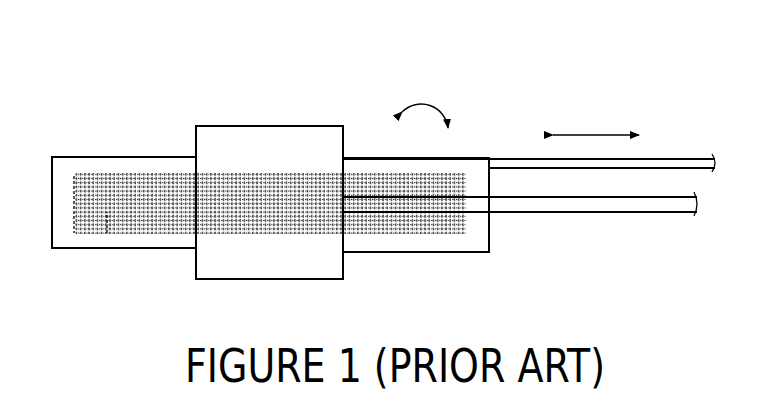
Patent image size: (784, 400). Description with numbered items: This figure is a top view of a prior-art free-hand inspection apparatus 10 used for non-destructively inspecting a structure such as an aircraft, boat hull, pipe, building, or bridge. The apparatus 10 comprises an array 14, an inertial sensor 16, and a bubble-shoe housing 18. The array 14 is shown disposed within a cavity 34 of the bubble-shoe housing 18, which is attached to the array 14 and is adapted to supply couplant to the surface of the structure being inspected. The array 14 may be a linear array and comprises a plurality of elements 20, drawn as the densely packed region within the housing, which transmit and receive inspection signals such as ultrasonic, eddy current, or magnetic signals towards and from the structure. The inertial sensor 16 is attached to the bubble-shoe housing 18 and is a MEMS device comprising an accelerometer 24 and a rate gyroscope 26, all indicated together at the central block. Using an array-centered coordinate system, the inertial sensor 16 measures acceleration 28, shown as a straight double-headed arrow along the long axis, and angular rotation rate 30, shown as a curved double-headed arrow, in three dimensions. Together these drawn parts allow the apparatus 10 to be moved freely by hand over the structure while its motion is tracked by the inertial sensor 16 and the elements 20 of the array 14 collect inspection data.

The free-hand inspection apparatus 10 is at (378, 76).
The array 14 is at (107, 233).
The inertial sensor 16 is at (217, 126).
The bubble-shoe housing 18 is at (52, 188).
The elements 20 is at (145, 172).
The accelerometer 24 is at (269, 202).
The rate gyroscope 26 is at (269, 202).
The acceleration 28 is at (585, 132).
The angular rotation rate 30 is at (436, 90).
The cavity 34 is at (73, 212).